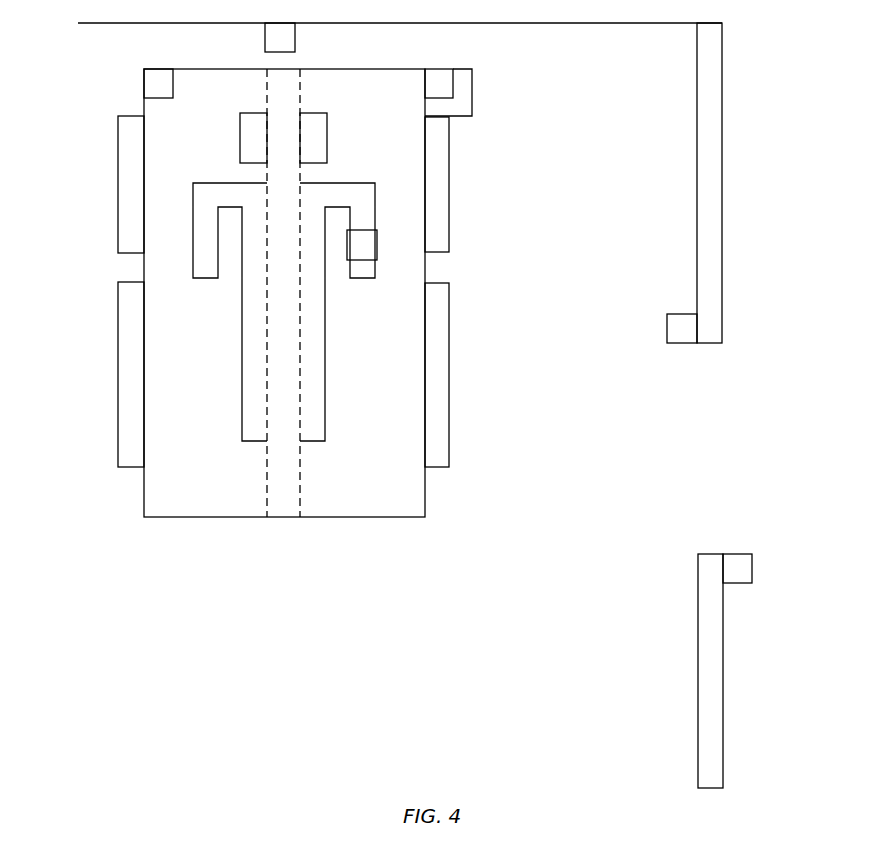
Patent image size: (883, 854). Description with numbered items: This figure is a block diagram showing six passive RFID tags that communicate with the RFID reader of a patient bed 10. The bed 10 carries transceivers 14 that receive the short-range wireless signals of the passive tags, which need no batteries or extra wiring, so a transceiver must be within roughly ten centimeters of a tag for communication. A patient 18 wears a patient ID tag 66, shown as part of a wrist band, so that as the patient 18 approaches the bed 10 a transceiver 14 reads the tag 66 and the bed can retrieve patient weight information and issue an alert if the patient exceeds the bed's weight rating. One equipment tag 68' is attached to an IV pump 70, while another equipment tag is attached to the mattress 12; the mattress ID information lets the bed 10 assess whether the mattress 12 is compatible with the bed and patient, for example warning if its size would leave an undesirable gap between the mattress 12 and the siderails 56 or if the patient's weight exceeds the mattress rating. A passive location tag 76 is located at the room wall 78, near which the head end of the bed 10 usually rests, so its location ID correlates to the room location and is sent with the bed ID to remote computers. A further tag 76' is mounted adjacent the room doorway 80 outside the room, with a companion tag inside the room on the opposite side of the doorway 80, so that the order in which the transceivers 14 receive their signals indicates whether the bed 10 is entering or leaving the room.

The patient bed 10 is at (205, 540).
The mattress 12 is at (362, 518).
The transceivers 14 is at (290, 478).
The patient 18 is at (224, 320).
The siderails 56 is at (118, 198).
The patient ID tag 66 is at (377, 245).
The equipment tag 68' is at (462, 65).
The IV pump 70 is at (472, 97).
The passive location tag 76 is at (314, 44).
The passive location tag 76' is at (778, 560).
The room wall 78 is at (566, 23).
The room doorway 80 is at (725, 418).